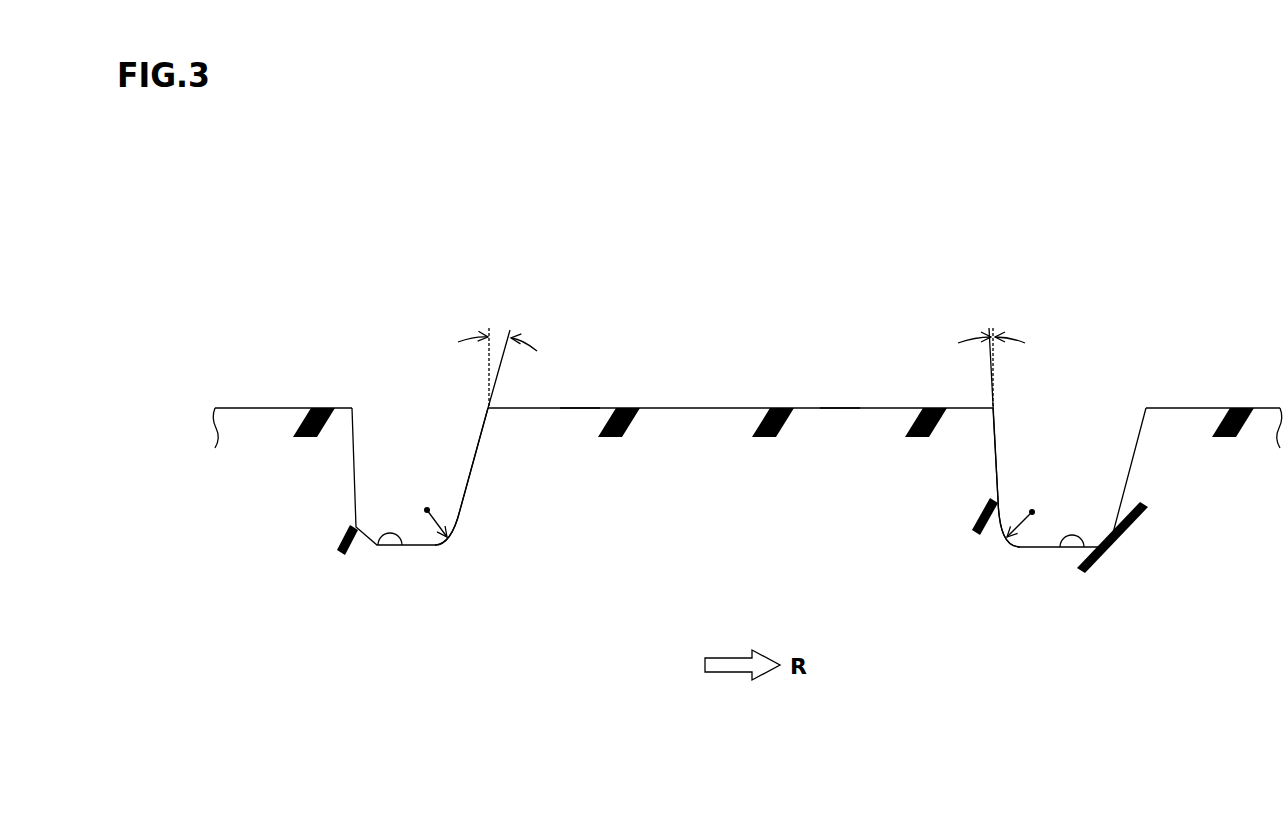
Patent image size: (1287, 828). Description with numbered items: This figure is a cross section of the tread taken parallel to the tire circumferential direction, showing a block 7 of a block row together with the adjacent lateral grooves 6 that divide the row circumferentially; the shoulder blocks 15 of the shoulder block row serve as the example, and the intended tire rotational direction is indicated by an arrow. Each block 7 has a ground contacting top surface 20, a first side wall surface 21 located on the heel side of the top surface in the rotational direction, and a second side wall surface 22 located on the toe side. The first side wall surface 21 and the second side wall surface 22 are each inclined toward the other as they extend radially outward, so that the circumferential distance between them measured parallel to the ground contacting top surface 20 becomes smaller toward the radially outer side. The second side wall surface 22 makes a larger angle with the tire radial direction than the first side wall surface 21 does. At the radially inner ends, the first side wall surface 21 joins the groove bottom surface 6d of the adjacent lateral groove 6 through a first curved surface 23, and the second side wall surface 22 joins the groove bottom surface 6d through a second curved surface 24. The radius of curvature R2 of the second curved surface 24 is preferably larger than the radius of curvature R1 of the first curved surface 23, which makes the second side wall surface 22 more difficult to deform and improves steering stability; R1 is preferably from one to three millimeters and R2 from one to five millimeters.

The shoulder block 15 is at (270, 406).
The lateral groove 6 is at (388, 424).
The groove bottom surface 6d is at (378, 540).
The ground contacting top surface 20 is at (575, 406).
The block 7 is at (840, 406).
The second side wall surface 22 is at (473, 462).
The first side wall surface 21 is at (996, 453).
The second curved surface 24 is at (450, 512).
The first curved surface 23 is at (1007, 537).
The radius of curvature of second curved surface R2 is at (435, 522).
The radius of curvature of first curved surface R1 is at (1022, 522).